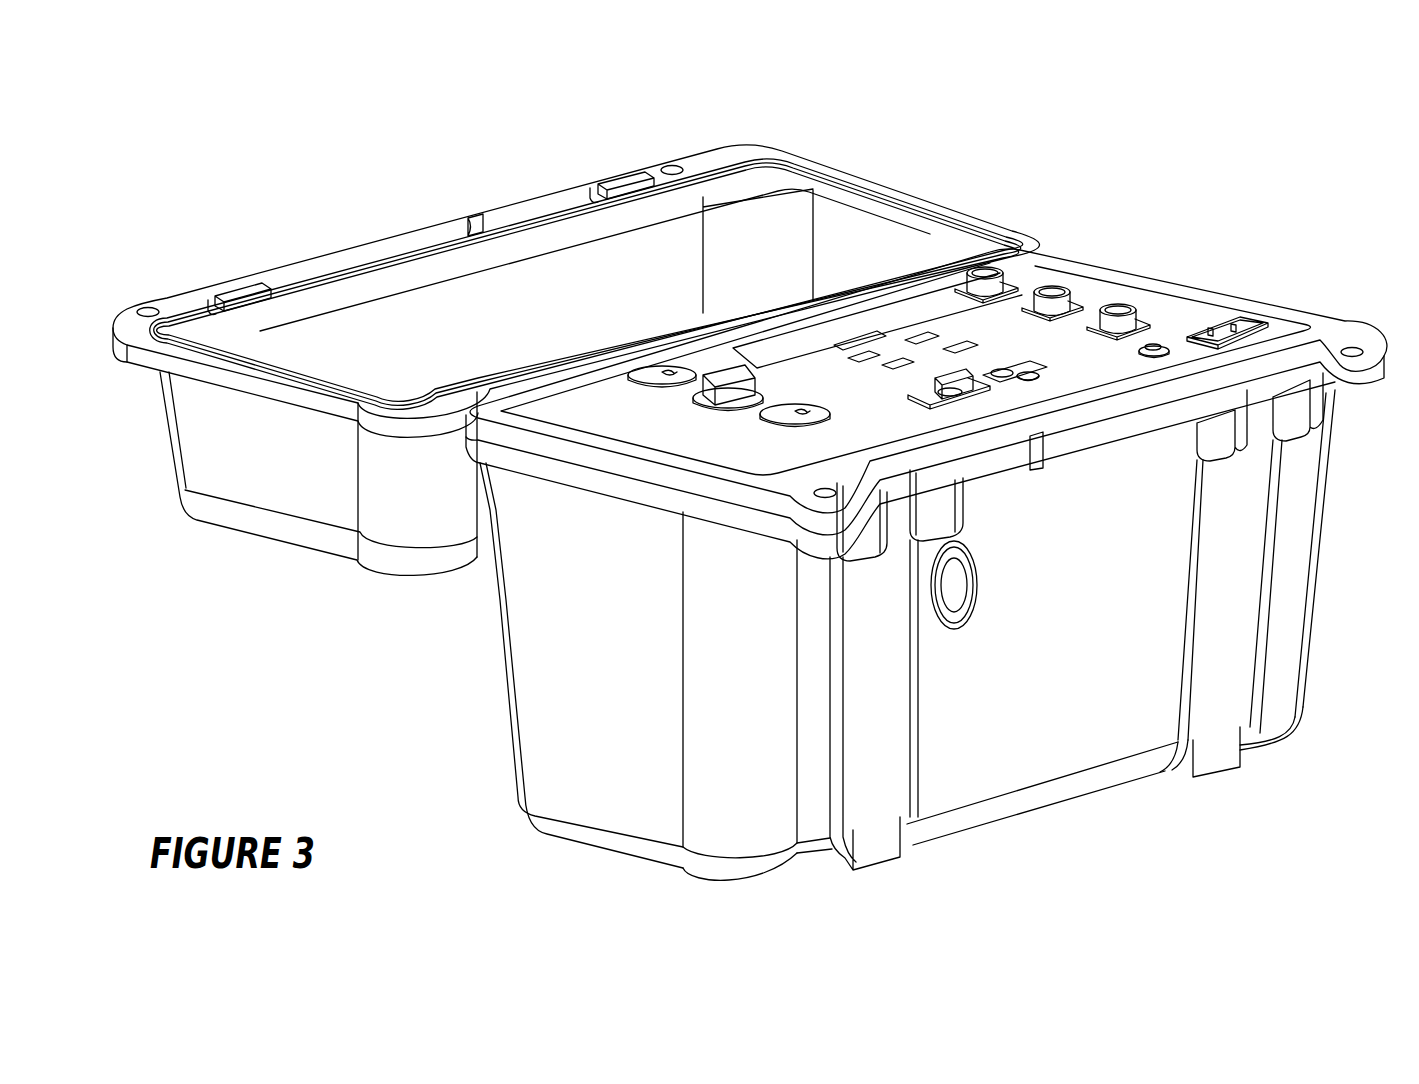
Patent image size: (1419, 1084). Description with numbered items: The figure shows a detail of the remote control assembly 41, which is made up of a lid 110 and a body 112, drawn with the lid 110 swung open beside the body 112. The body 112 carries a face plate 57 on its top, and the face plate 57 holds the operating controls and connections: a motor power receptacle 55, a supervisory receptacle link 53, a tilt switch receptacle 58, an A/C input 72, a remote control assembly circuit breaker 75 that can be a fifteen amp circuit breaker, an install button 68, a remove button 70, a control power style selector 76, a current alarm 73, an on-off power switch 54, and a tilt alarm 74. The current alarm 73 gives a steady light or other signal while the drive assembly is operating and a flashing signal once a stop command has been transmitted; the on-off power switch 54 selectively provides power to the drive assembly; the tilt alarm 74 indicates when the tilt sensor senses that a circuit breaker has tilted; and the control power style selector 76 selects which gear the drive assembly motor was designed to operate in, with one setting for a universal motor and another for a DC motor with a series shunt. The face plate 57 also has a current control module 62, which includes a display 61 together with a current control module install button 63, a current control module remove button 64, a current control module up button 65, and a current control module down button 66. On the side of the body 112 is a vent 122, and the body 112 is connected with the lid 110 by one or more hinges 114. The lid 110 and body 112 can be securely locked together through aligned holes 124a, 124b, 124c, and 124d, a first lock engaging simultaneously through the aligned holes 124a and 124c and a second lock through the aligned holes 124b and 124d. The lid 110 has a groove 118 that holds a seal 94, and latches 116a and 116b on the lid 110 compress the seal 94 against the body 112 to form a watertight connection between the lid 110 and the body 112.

The remote control assembly 41 is at (1160, 121).
The seal 94 is at (128, 320).
The lid 110 is at (257, 495).
The body 112 is at (580, 803).
The hinges 114 is at (548, 372).
The latch 116a is at (244, 283).
The latch 116b is at (627, 170).
The groove 118 is at (183, 306).
The vent 122 is at (973, 591).
The aligned hole 124a is at (149, 300).
The aligned hole 124b is at (671, 160).
The aligned hole 124c is at (822, 482).
The aligned hole 124d is at (1355, 339).
The supervisory receptacle link 53 is at (1138, 318).
The on-off power switch 54 is at (720, 388).
The motor power receptacle 55 is at (1013, 284).
The face plate 57 is at (1138, 277).
The tilt switch receptacle 58 is at (1072, 297).
The display 61 is at (862, 330).
The current control module 62 is at (803, 340).
The current control module install button 63 is at (915, 335).
The current control module remove button 64 is at (960, 345).
The current control module up button 65 is at (835, 356).
The current control module down button 66 is at (880, 362).
The install button 68 is at (1008, 366).
The remove button 70 is at (1030, 374).
The A/C input 72 is at (1220, 320).
The current alarm 73 is at (673, 380).
The tilt alarm 74 is at (807, 418).
The remote control assembly circuit breaker 75 is at (1143, 349).
The control power style selector 76 is at (945, 380).